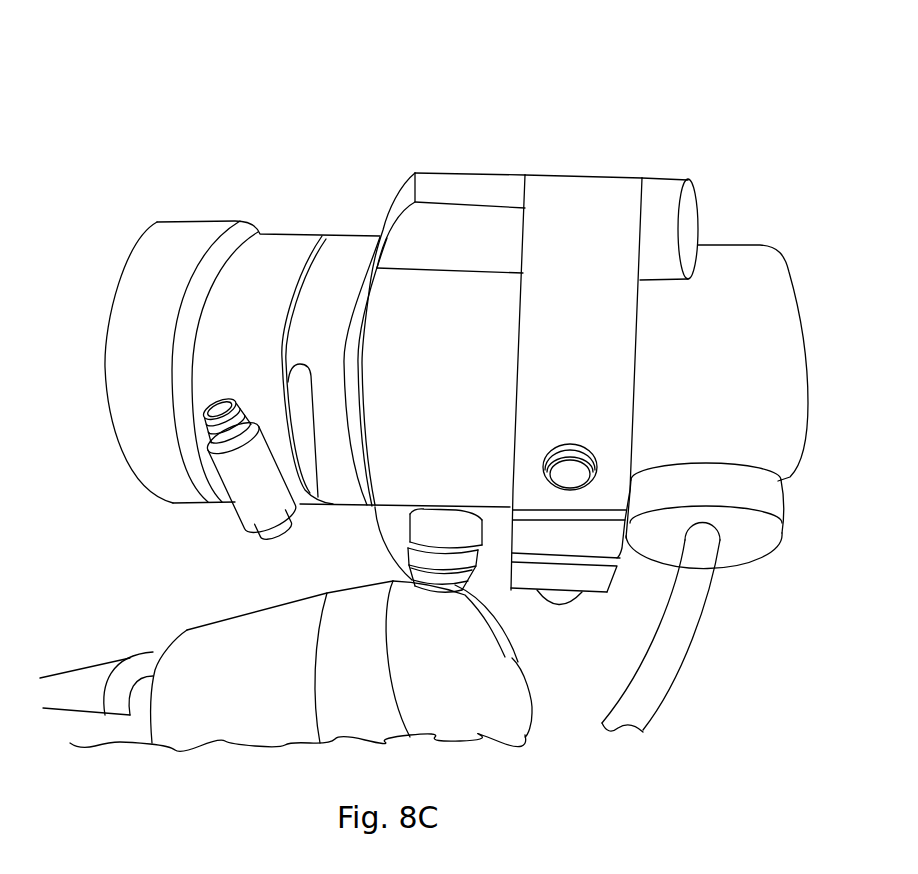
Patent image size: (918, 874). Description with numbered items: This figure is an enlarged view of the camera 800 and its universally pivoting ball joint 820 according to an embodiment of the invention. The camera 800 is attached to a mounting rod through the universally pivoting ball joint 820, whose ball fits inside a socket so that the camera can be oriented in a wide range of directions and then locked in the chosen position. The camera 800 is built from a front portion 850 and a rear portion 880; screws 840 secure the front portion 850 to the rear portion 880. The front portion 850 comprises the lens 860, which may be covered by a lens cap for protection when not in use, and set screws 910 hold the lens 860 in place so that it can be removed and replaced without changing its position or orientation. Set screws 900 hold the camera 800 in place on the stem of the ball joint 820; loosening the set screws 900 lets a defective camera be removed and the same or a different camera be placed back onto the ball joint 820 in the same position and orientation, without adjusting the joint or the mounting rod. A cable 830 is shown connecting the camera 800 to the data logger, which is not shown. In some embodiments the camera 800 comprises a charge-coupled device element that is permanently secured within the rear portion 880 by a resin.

The camera 800 is at (458, 94).
The universally pivoting ball joint 820 is at (497, 720).
The cable 830 is at (663, 669).
The screws 840 is at (688, 237).
The front portion 850 is at (318, 192).
The lens 860 is at (147, 283).
The rear portion 880 is at (708, 165).
The set screws 900 is at (563, 598).
The set screws 910 is at (281, 528).